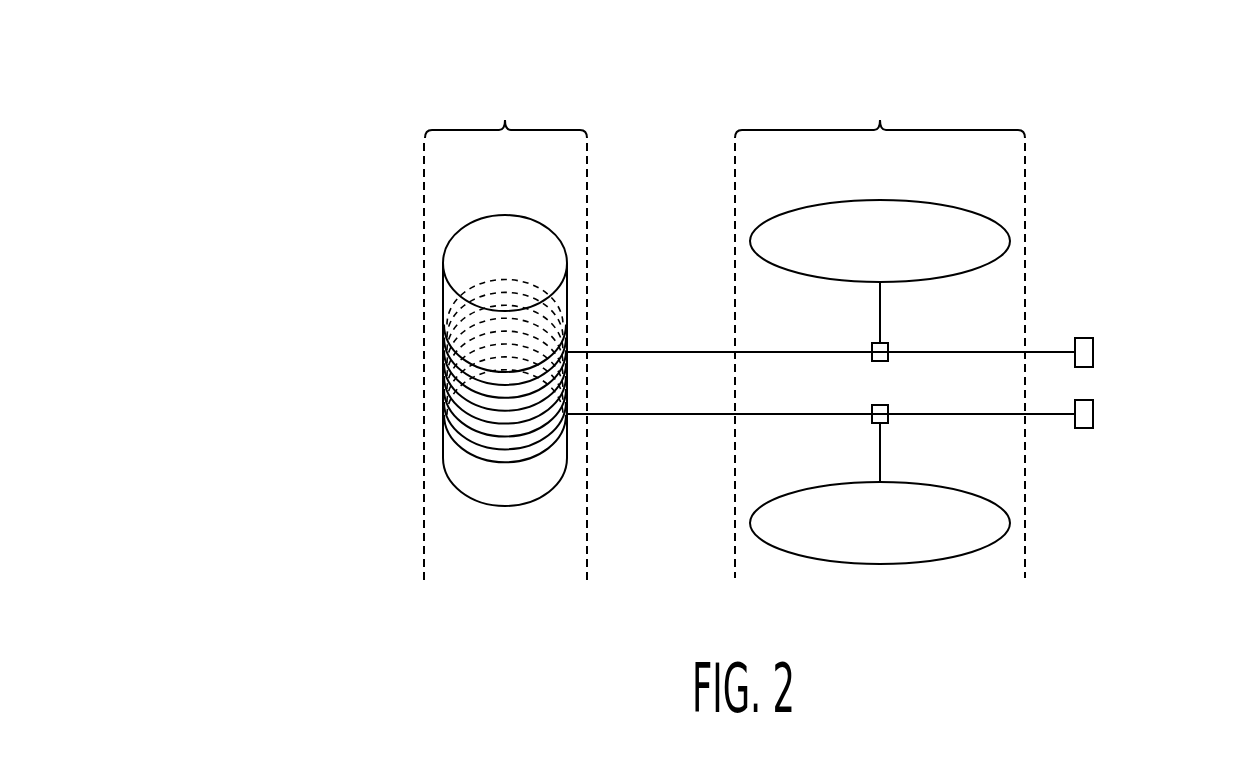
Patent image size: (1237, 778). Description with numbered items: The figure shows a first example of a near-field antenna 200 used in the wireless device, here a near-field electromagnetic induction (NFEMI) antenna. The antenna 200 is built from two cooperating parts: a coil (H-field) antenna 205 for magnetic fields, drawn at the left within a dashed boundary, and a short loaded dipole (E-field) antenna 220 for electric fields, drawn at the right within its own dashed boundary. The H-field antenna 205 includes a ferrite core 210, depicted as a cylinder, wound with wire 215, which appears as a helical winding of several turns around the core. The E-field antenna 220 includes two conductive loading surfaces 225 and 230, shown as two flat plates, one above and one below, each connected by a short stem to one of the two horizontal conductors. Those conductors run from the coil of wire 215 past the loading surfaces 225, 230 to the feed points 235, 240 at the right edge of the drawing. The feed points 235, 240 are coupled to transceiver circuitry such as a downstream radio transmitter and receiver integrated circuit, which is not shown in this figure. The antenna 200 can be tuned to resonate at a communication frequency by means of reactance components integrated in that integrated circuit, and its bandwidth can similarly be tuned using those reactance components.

The near-field antenna 200 is at (268, 151).
The coil (H-field) antenna 205 is at (505, 340).
The ferrite core 210 is at (504, 215).
The wire 215 is at (488, 462).
The short loaded dipole (E-field) antenna 220 is at (880, 330).
The conductive loading surface 225 is at (929, 203).
The conductive loading surface 230 is at (933, 487).
The feed point 235 is at (1093, 349).
The feed point 240 is at (1093, 420).